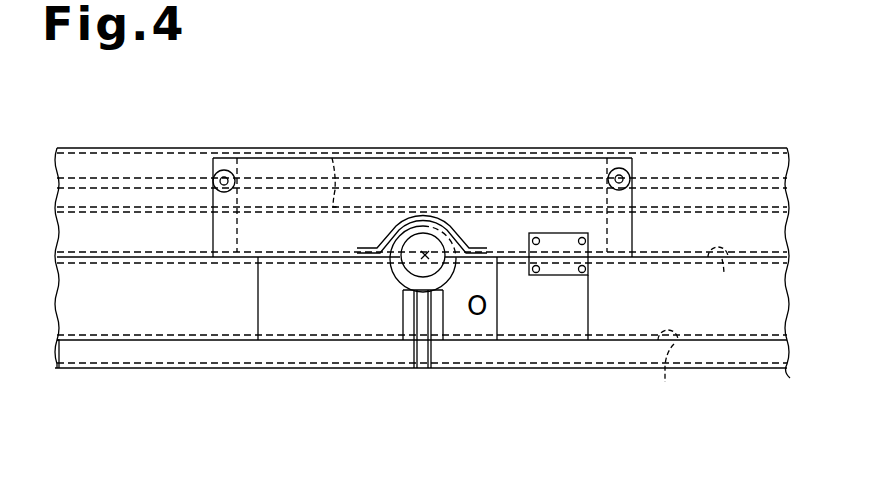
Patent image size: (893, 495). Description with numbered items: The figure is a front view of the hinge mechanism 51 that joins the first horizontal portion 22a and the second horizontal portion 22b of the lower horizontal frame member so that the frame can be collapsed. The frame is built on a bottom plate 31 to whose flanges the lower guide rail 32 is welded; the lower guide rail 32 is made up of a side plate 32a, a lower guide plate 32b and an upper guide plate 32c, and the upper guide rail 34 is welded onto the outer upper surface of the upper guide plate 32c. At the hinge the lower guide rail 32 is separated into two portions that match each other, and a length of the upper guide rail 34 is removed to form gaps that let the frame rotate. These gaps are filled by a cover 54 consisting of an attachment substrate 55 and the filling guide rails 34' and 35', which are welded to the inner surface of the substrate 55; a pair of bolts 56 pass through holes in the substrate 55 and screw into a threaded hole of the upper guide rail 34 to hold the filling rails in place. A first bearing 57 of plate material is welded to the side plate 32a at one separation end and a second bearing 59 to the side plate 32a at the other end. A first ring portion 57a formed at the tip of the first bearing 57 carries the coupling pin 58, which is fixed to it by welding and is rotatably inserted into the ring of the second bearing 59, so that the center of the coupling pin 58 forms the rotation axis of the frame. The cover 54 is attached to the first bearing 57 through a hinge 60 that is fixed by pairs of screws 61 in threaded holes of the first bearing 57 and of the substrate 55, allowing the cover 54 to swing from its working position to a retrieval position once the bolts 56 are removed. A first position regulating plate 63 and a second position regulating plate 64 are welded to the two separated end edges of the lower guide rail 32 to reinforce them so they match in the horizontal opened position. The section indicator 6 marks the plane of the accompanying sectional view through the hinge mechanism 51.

The section line VI-VI 6 is at (424, 123).
The first horizontal portion 22a is at (155, 358).
The second horizontal portion 22b is at (707, 350).
The bottom plate 31 is at (217, 370).
The lower guide rail 32 is at (122, 323).
The side plate 32a is at (75, 330).
The lower guide plate 32b is at (667, 373).
The upper guide plate 32c is at (726, 277).
The upper guide rail 34 is at (422, 233).
The filling guide rail 34' is at (275, 119).
The filling guide rail 35' is at (333, 155).
The hinge mechanism 51 is at (594, 129).
The cover 54 is at (452, 133).
The attachment substrate 55 is at (495, 165).
The bolt 56 is at (225, 170).
The first bearing 57 is at (533, 325).
The first ring portion 57a is at (395, 268).
The coupling pin 58 is at (413, 268).
The second bearing 59 is at (283, 322).
The hinge 60 is at (560, 268).
The screw 61 is at (586, 269).
The first position regulating plate 63 is at (413, 352).
The second position regulating plate 64 is at (432, 352).